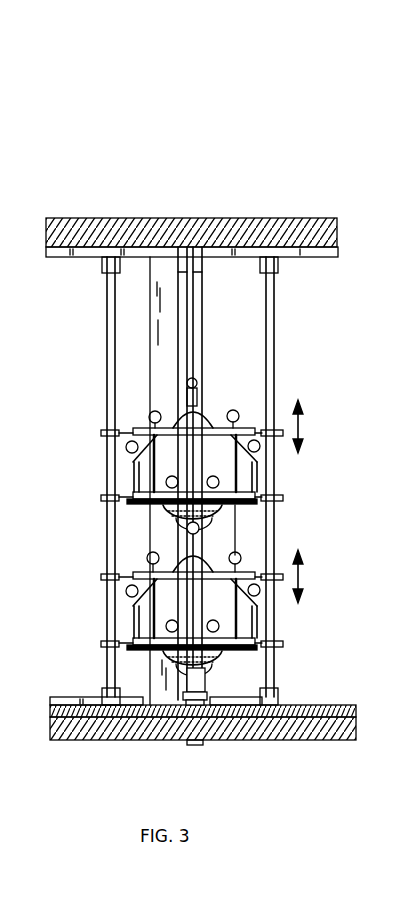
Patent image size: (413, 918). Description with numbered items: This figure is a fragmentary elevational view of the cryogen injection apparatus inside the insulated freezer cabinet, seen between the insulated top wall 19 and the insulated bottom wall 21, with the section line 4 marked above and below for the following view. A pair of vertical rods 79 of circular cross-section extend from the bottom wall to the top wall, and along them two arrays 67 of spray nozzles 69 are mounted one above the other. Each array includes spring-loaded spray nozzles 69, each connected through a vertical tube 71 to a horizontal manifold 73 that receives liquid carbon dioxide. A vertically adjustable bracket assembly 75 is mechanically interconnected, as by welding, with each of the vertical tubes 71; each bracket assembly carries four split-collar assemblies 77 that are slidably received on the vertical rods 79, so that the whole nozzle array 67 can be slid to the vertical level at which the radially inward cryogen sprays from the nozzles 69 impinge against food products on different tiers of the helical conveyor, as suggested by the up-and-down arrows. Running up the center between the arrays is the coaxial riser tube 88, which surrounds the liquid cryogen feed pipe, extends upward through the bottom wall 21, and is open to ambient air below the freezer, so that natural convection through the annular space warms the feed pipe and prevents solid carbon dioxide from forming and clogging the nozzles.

The section line 4- 4 is at (187, 202).
The top wall 19 is at (263, 218).
The bottom wall 21 is at (275, 740).
The array of spray nozzles 67 is at (304, 362).
The spray nozzle 69 is at (229, 410).
The vertical tube 71 is at (137, 484).
The horizontal manifold 73 is at (238, 655).
The bracket assembly 75 is at (149, 412).
The split-collar assembly 77 is at (120, 501).
The vertical rod 79 is at (275, 302).
The riser tube 88 is at (193, 306).